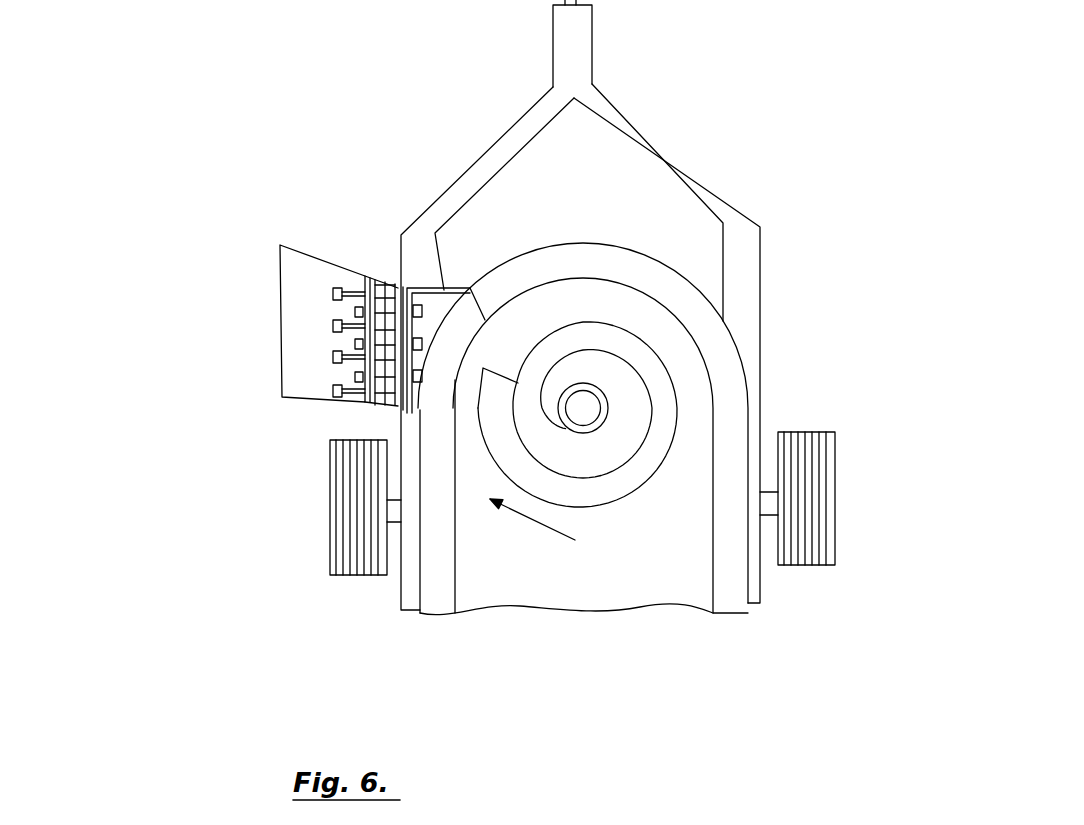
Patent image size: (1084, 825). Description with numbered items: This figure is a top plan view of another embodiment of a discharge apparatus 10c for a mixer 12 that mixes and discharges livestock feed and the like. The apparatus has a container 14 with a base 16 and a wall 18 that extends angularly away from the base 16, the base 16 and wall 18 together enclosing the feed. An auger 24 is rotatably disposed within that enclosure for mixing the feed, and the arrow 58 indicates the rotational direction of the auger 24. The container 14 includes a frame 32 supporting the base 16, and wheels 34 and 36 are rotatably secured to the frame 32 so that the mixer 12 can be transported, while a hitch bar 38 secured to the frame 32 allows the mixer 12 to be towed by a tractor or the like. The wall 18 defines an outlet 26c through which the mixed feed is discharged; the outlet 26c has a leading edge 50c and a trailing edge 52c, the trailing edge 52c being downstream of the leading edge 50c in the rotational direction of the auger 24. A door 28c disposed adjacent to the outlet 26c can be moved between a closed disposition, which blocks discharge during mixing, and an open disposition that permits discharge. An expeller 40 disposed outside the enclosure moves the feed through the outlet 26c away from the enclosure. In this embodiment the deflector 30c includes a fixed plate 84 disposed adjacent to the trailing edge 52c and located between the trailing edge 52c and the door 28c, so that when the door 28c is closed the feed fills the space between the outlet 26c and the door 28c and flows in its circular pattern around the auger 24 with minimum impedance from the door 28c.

The discharge apparatus 10c is at (700, 87).
The mixer 12 is at (487, 550).
The container 14 is at (725, 430).
The base 16 is at (664, 549).
The wall 18 is at (650, 275).
The auger 24 is at (592, 449).
The outlet 26c is at (433, 398).
The door 28c is at (367, 276).
The deflector 30c is at (423, 270).
The frame 32 is at (673, 157).
The wheel 34 is at (350, 540).
The wheel 36 is at (805, 520).
The hitch bar 38 is at (562, 27).
The expeller 40 is at (332, 355).
The leading edge 50c is at (420, 413).
The trailing edge 52c is at (473, 288).
The arrow 58 is at (560, 540).
The fixed plate 84 is at (435, 233).